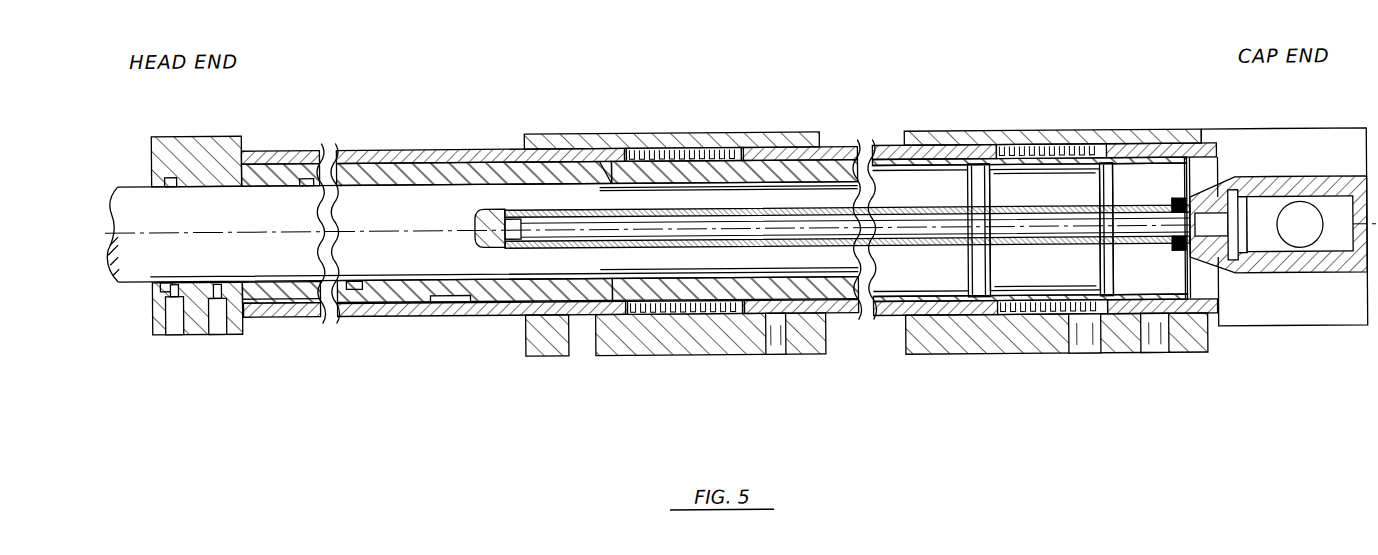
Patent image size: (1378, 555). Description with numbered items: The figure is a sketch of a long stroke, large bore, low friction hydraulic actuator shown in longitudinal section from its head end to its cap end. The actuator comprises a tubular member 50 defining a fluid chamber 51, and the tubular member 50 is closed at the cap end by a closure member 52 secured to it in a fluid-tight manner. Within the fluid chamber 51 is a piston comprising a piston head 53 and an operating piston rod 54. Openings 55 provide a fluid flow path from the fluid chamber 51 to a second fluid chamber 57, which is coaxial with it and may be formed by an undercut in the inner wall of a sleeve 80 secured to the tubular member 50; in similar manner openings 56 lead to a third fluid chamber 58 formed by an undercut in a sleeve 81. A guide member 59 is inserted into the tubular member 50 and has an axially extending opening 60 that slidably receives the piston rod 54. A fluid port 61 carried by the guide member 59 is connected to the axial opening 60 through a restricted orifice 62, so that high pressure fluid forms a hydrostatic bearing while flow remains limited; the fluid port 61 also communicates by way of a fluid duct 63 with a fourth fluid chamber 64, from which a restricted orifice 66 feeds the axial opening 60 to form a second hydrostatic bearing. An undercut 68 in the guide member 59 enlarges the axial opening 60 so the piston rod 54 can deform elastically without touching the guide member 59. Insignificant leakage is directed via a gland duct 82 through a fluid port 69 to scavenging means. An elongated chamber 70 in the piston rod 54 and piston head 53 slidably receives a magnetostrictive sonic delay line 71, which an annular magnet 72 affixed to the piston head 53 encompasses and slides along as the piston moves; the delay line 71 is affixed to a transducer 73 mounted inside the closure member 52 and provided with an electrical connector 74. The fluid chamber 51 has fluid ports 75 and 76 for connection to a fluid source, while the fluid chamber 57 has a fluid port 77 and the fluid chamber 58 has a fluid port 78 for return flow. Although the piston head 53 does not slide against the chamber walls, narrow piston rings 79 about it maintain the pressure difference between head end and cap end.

The tubular member 50 is at (835, 155).
The fluid chamber 51 is at (840, 170).
The closure member 52 is at (1255, 138).
The piston head 53 is at (1138, 176).
The operating piston rod 54 is at (900, 180).
The openings 55 is at (1080, 150).
The openings 56 is at (738, 153).
The second fluid chamber 57 is at (960, 155).
The third fluid chamber 58 is at (697, 152).
The guide member 59 is at (238, 140).
The axial opening 60 is at (210, 186).
The fluid port 61 is at (226, 338).
The restricted orifice 62 is at (216, 310).
The fluid duct 63 is at (258, 318).
The fourth fluid chamber 64 is at (368, 163).
The restricted orifice 66 is at (447, 303).
The undercut 68 is at (305, 182).
The fluid port 69 is at (172, 337).
The elongated chamber 70 is at (500, 246).
The magnetostrictive sonic delay line 71 is at (570, 228).
The annular magnet 72 is at (1170, 254).
The transducer 73 is at (1273, 250).
The electrical connector 74 is at (1303, 250).
The fluid port 75 is at (578, 352).
The fluid port 76 is at (1156, 362).
The fluid port 77 is at (1088, 362).
The fluid port 78 is at (775, 352).
The narrow piston rings 79 is at (1095, 270).
The sleeve 80 is at (1045, 136).
The sleeve 81 is at (548, 140).
The gland duct 82 is at (168, 180).